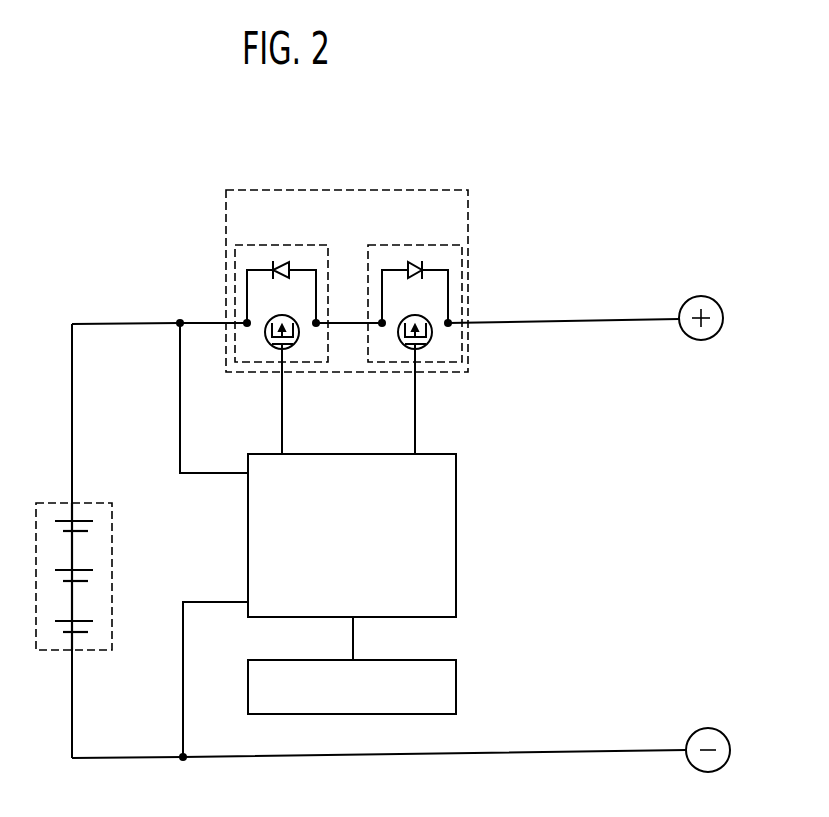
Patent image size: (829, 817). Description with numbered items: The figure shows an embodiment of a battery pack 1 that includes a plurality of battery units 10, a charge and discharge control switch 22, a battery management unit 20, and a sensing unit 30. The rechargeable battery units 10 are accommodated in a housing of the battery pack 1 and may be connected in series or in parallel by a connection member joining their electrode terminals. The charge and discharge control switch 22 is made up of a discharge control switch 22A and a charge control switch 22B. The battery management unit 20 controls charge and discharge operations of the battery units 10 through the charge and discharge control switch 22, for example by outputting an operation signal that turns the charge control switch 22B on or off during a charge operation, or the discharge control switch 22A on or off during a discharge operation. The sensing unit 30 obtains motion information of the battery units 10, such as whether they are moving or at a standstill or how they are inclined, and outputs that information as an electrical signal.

The battery pack 1 is at (603, 133).
The battery units 10 is at (54, 503).
The battery management unit 20 is at (346, 453).
The charge and discharge control switch 22 is at (394, 190).
The discharge control switch 22A is at (278, 245).
The charge control switch 22B is at (414, 245).
The sensing unit 30 is at (457, 685).